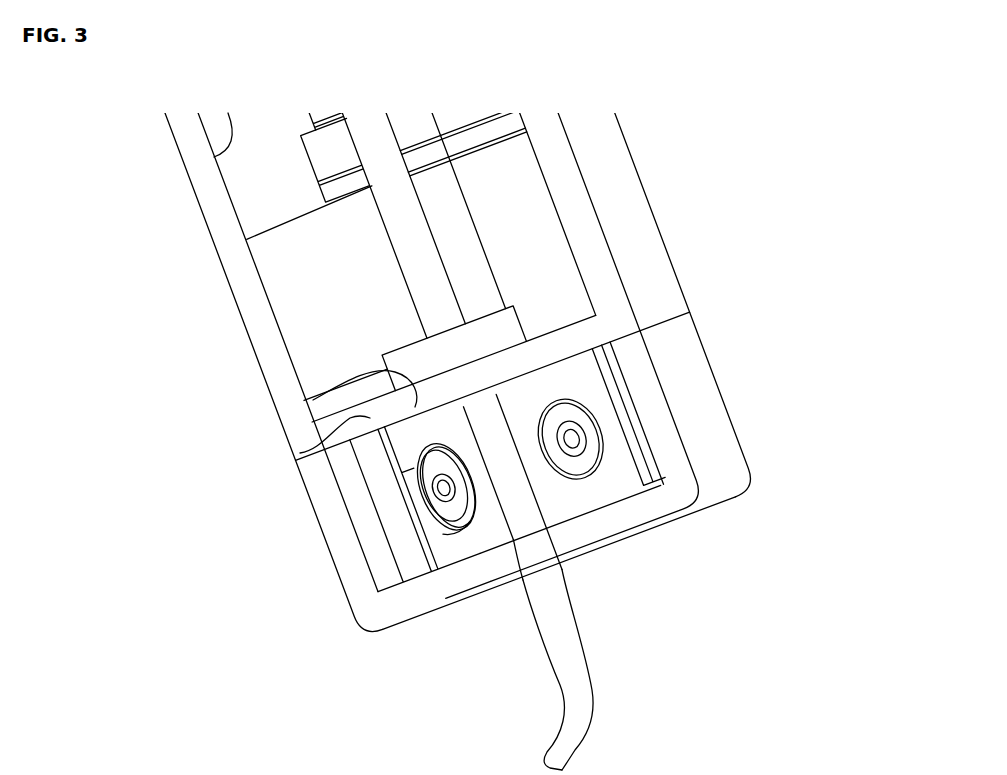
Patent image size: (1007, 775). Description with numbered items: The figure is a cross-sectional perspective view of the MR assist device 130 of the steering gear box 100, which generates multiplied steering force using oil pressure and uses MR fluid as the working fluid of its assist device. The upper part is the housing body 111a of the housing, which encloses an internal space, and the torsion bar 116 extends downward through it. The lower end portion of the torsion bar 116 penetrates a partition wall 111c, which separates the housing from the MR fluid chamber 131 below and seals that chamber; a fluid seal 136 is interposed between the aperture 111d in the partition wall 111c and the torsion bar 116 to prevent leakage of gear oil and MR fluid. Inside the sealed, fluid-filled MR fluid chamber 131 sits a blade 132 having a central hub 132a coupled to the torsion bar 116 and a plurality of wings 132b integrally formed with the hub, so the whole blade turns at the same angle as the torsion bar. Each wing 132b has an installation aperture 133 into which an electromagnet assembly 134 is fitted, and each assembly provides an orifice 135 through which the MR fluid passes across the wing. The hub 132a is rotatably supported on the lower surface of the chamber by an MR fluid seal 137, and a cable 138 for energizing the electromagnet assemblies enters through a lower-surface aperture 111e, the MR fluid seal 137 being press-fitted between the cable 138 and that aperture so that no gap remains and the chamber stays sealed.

The steering gear box 100 is at (715, 343).
The housing body 111a is at (252, 302).
The partition wall 111c is at (300, 453).
The aperture 111d is at (305, 400).
The lower-surface aperture 111e is at (485, 556).
The torsion bar 116 is at (432, 252).
The MR assist device 130 is at (330, 557).
The MR fluid chamber 131 is at (372, 613).
The blade 132 is at (558, 363).
The hub 132a is at (512, 487).
The wings 132b is at (613, 415).
The installation aperture 133 is at (487, 587).
The electromagnet assembly 134 is at (450, 523).
The orifice 135 is at (427, 460).
The fluid seal 136 is at (488, 370).
The MR fluid seal 137 is at (537, 550).
The cable 138 is at (578, 716).